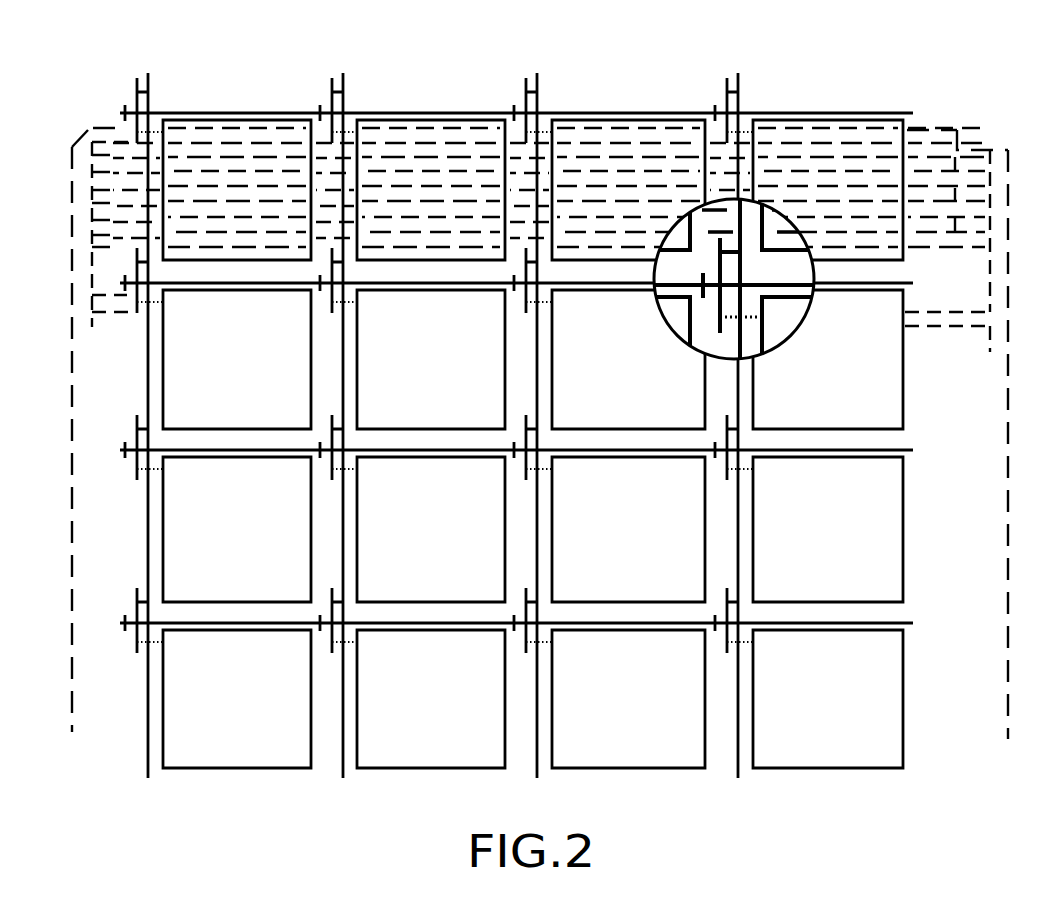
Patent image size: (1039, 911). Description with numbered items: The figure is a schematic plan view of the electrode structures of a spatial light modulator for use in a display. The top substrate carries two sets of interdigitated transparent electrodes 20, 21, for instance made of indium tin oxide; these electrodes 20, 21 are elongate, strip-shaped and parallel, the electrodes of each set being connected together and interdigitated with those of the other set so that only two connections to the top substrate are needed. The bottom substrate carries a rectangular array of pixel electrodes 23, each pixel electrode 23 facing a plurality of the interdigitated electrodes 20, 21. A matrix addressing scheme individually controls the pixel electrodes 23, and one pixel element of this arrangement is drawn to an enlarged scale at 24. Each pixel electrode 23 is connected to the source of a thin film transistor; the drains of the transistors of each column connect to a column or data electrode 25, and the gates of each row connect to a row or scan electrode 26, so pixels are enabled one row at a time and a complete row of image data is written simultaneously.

The interdigitated transparent electrode 20 is at (606, 128).
The interdigitated transparent electrode 21 is at (650, 143).
The pixel electrode 23 is at (230, 120).
The pixel element of the addressing arrangement 24 is at (803, 233).
The column or data electrode 25 is at (742, 87).
The row or scan electrode 26 is at (122, 106).